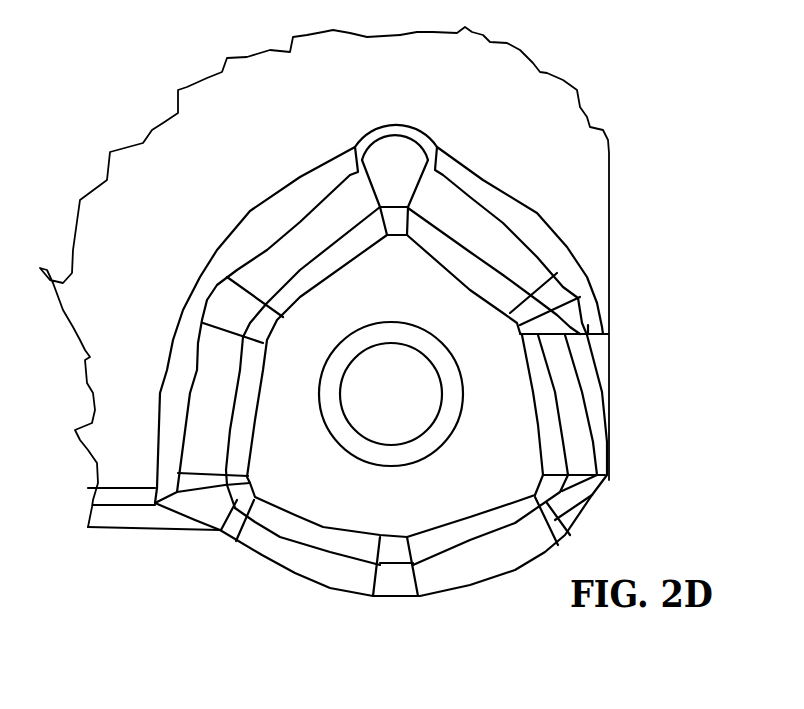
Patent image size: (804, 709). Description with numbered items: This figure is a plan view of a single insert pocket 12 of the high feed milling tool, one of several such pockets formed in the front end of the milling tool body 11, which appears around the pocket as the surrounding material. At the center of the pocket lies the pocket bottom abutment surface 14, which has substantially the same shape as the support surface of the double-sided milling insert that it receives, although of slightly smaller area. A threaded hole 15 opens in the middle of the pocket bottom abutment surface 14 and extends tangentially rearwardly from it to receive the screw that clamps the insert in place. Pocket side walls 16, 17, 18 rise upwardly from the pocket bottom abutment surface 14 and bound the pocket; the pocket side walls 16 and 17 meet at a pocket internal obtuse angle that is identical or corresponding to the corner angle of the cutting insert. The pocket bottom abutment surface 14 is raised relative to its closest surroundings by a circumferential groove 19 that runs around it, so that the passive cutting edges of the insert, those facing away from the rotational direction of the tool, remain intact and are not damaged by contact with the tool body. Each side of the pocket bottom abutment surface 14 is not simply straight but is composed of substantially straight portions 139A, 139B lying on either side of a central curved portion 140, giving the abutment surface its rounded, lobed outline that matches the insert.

The milling tool body 11 is at (597, 197).
The insert pocket 12 is at (522, 428).
The pocket bottom abutment surface 14 is at (338, 492).
The threaded hole 15 is at (433, 371).
The pocket side wall 16 is at (483, 220).
The pocket side wall 17 is at (295, 225).
The pocket side wall 18 is at (192, 392).
The circumferential groove 19 is at (453, 227).
The substantially straight portion 139A is at (483, 520).
The substantially straight portion 139B is at (322, 527).
The central curved portion 140 is at (398, 540).